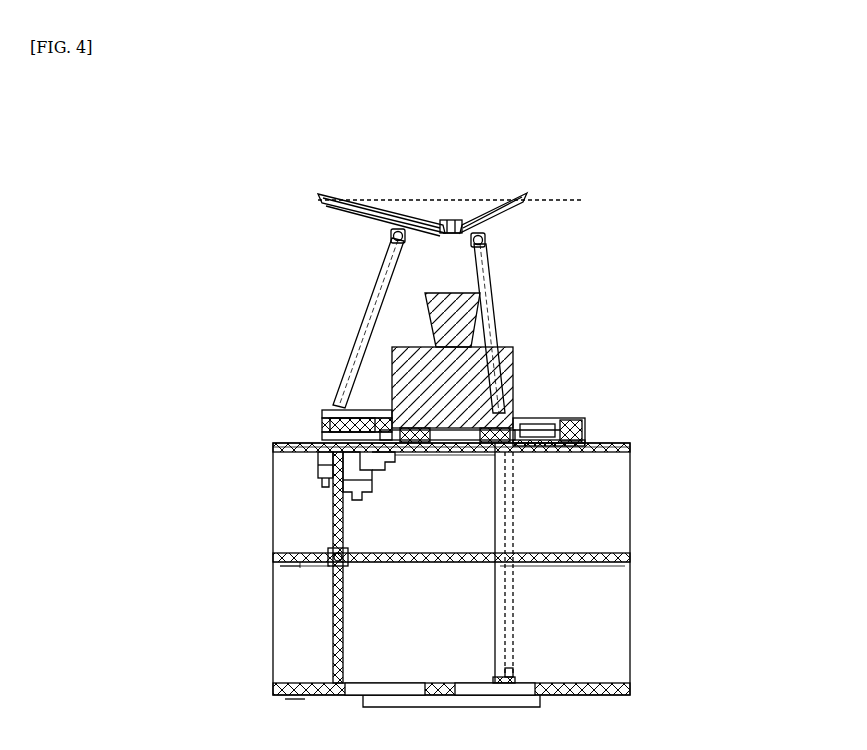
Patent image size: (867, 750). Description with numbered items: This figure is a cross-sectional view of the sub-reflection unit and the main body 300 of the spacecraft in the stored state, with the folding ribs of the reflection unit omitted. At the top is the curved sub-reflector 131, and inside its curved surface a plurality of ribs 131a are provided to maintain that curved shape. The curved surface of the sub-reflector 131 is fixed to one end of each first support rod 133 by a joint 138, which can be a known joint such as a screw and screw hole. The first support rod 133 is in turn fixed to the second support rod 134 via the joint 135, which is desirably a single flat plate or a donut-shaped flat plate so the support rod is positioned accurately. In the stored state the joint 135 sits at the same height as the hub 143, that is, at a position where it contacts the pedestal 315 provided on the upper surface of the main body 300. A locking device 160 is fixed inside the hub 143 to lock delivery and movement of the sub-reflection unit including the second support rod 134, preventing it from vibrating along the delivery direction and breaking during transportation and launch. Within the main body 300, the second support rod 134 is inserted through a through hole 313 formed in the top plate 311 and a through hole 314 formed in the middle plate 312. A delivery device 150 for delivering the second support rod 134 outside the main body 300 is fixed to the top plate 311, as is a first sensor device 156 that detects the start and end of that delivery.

The sub-reflector 131 is at (472, 198).
The ribs 131a is at (390, 200).
The first support rod 133 is at (360, 300).
The second support rod 134 is at (330, 622).
The joint 135 is at (523, 412).
The joint 138 is at (393, 234).
The hub 143 is at (585, 421).
The delivery device 150 is at (322, 470).
The first sensor device 156 is at (410, 478).
The locking device 160 is at (345, 410).
The main body 300 is at (633, 598).
The top plate 311 is at (275, 449).
The middle plate 312 is at (296, 560).
The through hole 313 is at (322, 425).
The through hole 314 is at (332, 553).
The pedestal 315 is at (588, 441).